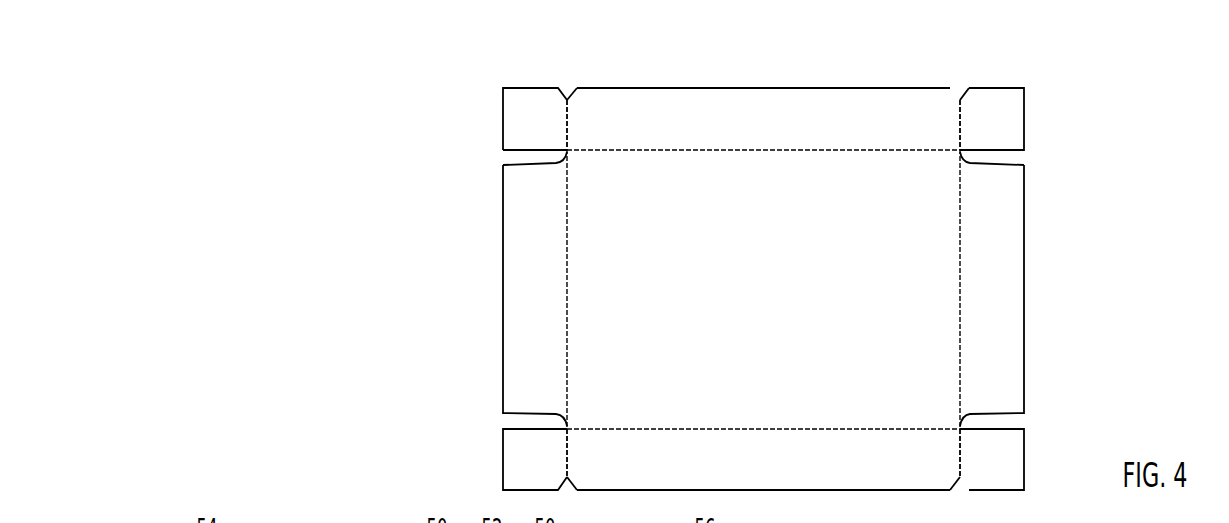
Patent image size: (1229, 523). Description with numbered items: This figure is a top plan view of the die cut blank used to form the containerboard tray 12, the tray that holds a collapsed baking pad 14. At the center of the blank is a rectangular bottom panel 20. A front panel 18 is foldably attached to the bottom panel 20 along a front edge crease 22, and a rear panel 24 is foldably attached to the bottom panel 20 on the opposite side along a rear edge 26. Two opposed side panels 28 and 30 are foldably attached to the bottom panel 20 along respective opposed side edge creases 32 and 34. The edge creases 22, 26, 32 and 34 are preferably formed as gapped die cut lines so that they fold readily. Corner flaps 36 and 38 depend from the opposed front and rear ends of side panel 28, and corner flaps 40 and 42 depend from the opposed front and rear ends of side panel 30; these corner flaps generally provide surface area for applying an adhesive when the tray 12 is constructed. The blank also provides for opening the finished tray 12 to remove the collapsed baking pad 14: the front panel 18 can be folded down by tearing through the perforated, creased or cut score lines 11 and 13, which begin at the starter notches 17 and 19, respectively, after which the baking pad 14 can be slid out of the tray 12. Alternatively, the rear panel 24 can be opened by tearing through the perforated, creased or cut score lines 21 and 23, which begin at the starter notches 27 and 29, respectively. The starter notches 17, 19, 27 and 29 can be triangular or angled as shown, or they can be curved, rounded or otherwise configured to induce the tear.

The score line 11 is at (567, 125).
The tray 12 is at (918, 60).
The score line 13 is at (567, 452).
The baking pad 14 is at (307, 510).
The starter notch 17 is at (565, 98).
The front panel 18 is at (515, 290).
The starter notch 19 is at (562, 485).
The bottom panel 20 is at (724, 272).
The score line 21 is at (960, 127).
The front edge crease 22 is at (567, 200).
The score line 23 is at (960, 453).
The rear panel 24 is at (995, 262).
The rear edge 26 is at (960, 367).
The starter notch 27 is at (961, 99).
The side panel 28 is at (657, 108).
The starter notch 29 is at (953, 483).
The side panel 30 is at (895, 473).
The side edge crease 32 is at (808, 151).
The side edge crease 34 is at (727, 428).
The corner flap 36 is at (515, 129).
The corner flap 38 is at (1007, 118).
The corner flap 40 is at (522, 457).
The corner flap 42 is at (1002, 447).